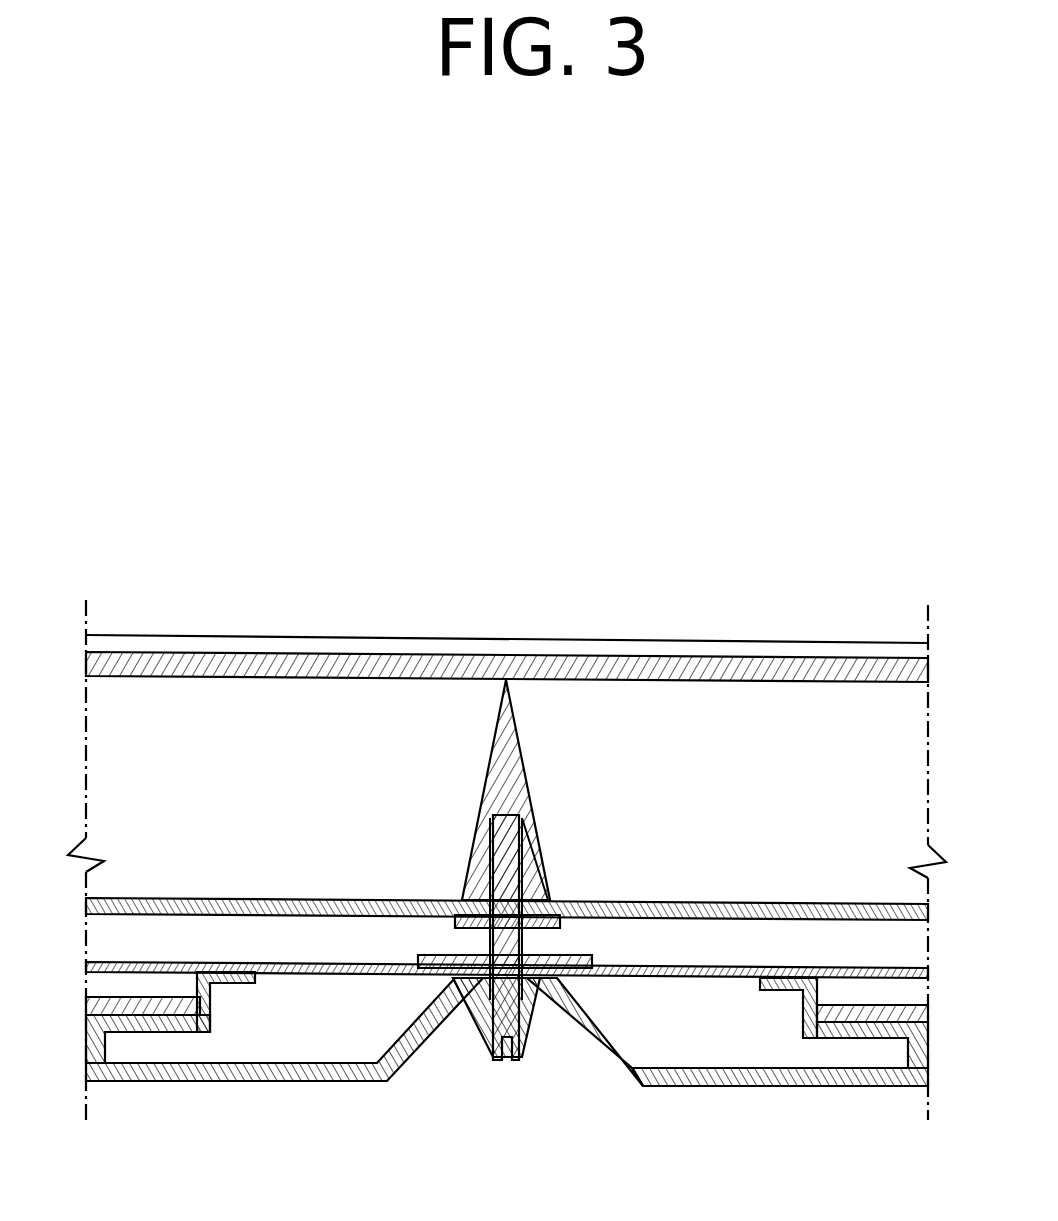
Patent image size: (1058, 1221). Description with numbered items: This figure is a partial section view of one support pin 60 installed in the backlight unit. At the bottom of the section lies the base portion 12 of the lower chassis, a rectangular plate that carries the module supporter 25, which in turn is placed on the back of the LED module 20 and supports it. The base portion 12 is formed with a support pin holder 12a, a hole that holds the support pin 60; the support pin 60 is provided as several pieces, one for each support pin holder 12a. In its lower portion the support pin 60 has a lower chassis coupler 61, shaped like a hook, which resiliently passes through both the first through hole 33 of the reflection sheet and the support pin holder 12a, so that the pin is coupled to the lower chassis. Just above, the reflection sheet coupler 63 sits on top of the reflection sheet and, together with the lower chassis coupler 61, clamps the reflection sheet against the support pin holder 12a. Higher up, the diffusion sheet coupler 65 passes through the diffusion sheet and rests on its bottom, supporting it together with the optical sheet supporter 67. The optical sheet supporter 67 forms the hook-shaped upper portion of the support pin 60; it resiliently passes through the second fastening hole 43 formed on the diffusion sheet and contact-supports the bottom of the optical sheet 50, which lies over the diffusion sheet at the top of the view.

The base portion 12 is at (507, 1088).
The support pin holder 12a is at (563, 1007).
The LED module 20 is at (123, 1037).
The module supporter 25 is at (197, 1033).
The first through hole 33 is at (540, 948).
The second fastening hole 43 is at (540, 887).
The optical sheet 50 is at (778, 660).
The support pin 60 is at (352, 718).
The lower chassis coupler 61 is at (478, 1010).
The reflection sheet coupler 63 is at (455, 890).
The diffusion sheet coupler 65 is at (466, 860).
The optical sheet supporter 67 is at (496, 726).